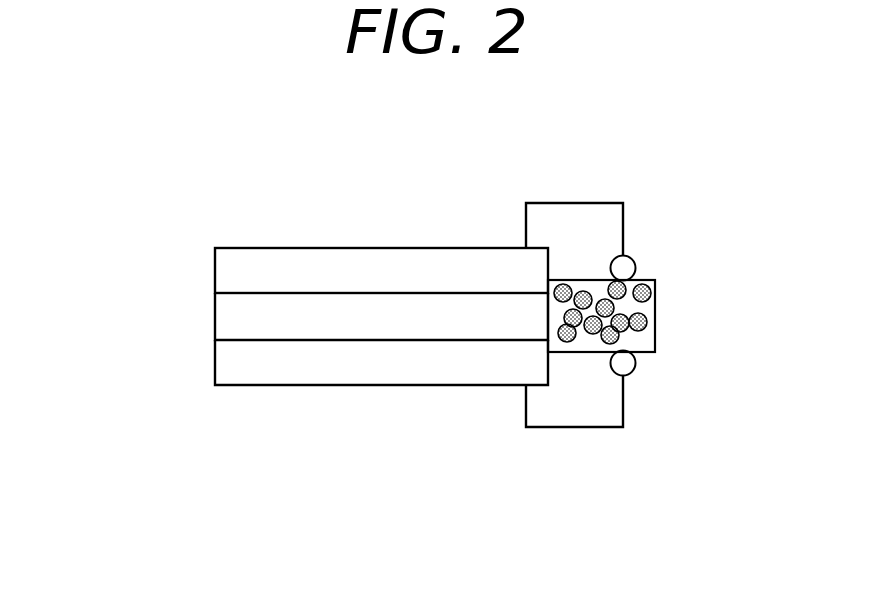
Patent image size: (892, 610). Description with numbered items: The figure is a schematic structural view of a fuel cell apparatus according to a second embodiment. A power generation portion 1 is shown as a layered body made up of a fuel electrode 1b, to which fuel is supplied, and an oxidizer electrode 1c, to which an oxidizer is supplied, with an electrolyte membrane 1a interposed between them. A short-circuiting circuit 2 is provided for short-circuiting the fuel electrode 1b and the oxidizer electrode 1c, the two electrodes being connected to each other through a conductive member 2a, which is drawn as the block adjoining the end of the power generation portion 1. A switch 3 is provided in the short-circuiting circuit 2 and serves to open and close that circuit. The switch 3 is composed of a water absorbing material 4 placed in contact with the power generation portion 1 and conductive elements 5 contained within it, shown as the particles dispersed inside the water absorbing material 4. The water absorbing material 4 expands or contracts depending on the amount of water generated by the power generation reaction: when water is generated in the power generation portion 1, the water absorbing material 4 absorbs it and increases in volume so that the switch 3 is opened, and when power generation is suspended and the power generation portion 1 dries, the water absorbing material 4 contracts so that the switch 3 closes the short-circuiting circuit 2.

The power generation portion 1 is at (319, 318).
The electrolyte membrane 1a is at (285, 317).
The fuel electrode 1b is at (367, 375).
The oxidizer electrode 1c is at (372, 258).
The short-circuiting circuit 2 is at (601, 319).
The conductive member 2a is at (578, 203).
The switch 3 is at (636, 264).
The water absorbing material 4 is at (578, 357).
The conductive elements 5 is at (647, 340).